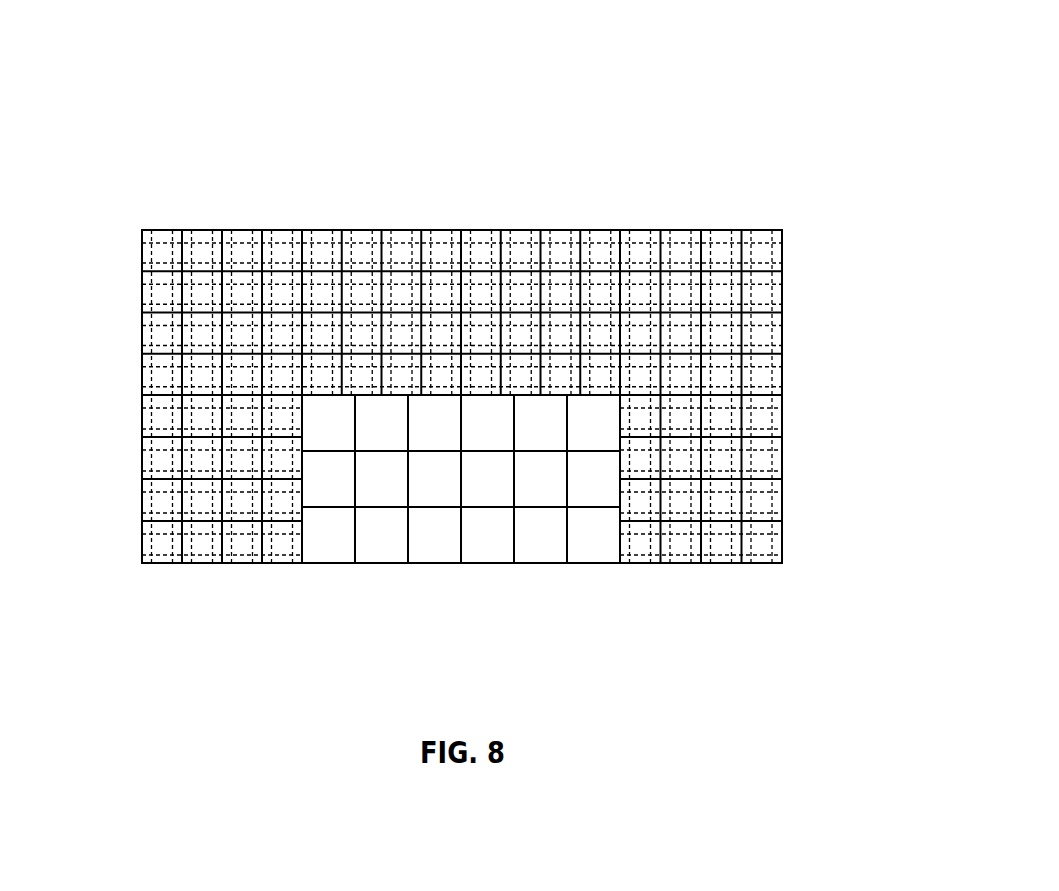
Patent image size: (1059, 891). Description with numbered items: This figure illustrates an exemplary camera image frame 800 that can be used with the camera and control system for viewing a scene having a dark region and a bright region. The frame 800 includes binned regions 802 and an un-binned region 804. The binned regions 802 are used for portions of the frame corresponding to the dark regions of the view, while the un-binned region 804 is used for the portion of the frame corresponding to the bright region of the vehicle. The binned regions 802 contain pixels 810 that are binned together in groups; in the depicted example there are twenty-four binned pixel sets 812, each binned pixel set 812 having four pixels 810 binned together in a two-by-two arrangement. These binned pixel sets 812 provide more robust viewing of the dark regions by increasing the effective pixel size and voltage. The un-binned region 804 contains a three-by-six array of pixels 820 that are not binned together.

The camera image frame 800 is at (780, 82).
The binned regions 802 is at (200, 222).
The un-binned region 804 is at (407, 568).
The pixels 810 is at (642, 545).
The binned pixel sets 812 is at (260, 272).
The pixels 820 is at (332, 545).